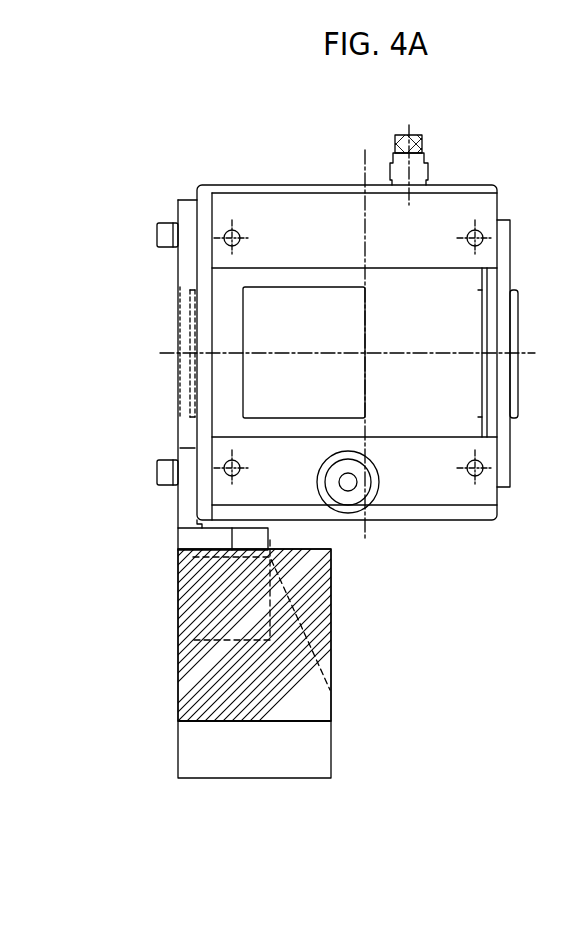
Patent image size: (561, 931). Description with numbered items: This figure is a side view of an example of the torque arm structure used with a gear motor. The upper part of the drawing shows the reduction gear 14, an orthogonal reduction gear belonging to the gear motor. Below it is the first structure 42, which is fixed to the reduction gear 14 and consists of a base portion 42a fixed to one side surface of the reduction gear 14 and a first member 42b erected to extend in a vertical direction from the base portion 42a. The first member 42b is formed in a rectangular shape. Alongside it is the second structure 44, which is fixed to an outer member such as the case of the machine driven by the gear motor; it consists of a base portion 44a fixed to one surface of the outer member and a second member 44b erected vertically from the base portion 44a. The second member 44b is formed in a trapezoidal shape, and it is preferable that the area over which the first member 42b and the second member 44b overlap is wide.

The reduction gear 14 is at (300, 208).
The first structure 42 is at (122, 525).
The base portion 42a is at (190, 538).
The first member 42b is at (193, 597).
The second structure 44 is at (408, 670).
The base portion 44a is at (300, 743).
The second member 44b is at (300, 687).